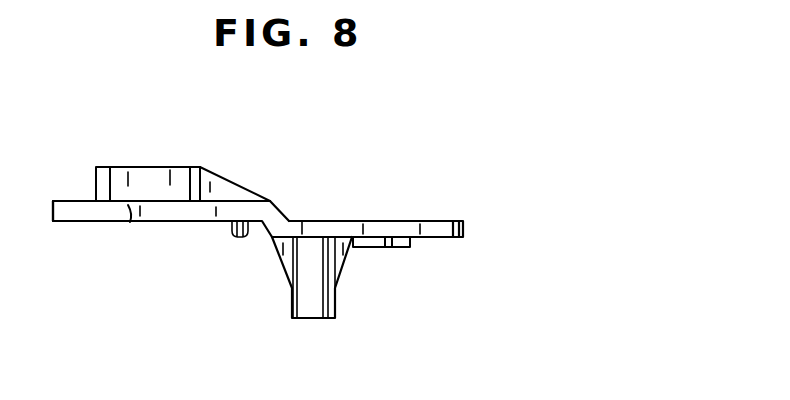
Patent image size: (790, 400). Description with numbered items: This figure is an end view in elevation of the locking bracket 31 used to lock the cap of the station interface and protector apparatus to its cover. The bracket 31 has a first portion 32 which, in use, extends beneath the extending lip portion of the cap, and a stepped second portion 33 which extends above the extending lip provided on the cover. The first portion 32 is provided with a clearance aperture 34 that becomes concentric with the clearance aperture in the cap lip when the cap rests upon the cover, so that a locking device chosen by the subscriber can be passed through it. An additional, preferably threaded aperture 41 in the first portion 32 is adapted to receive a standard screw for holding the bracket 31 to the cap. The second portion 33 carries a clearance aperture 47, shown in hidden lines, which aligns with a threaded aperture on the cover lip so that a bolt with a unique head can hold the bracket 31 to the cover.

The locking bracket 31 is at (272, 198).
The first portion 32 is at (348, 224).
The second portion 33 is at (92, 212).
The clearance aperture 34 is at (387, 247).
The threaded aperture 41 is at (320, 318).
The clearance aperture 47 is at (130, 222).